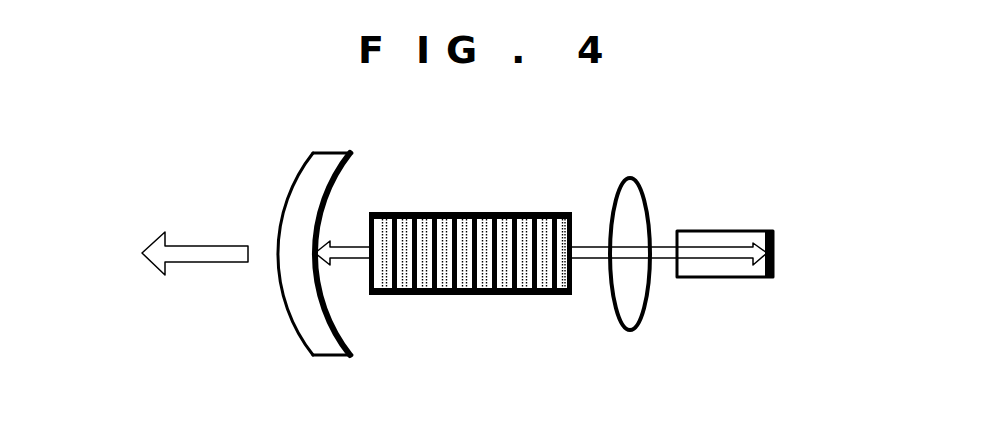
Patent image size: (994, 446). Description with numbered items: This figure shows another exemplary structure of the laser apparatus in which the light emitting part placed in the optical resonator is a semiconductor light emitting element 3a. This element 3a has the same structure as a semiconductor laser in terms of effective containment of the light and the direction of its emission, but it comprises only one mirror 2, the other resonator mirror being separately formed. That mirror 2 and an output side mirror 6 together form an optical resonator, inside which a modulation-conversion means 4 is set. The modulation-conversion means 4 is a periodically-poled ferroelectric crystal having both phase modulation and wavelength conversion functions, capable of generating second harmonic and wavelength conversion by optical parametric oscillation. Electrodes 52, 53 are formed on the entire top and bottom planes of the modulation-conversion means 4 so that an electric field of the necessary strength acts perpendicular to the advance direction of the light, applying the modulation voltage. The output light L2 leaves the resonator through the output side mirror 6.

The mirror 2 is at (775, 240).
The semiconductor light emitting element 3a is at (727, 230).
The modulation-conversion means 4 is at (538, 277).
The electrode 52 is at (475, 212).
The electrode 53 is at (423, 294).
The output side mirror 6 is at (310, 170).
The output laser beam L2 is at (162, 263).